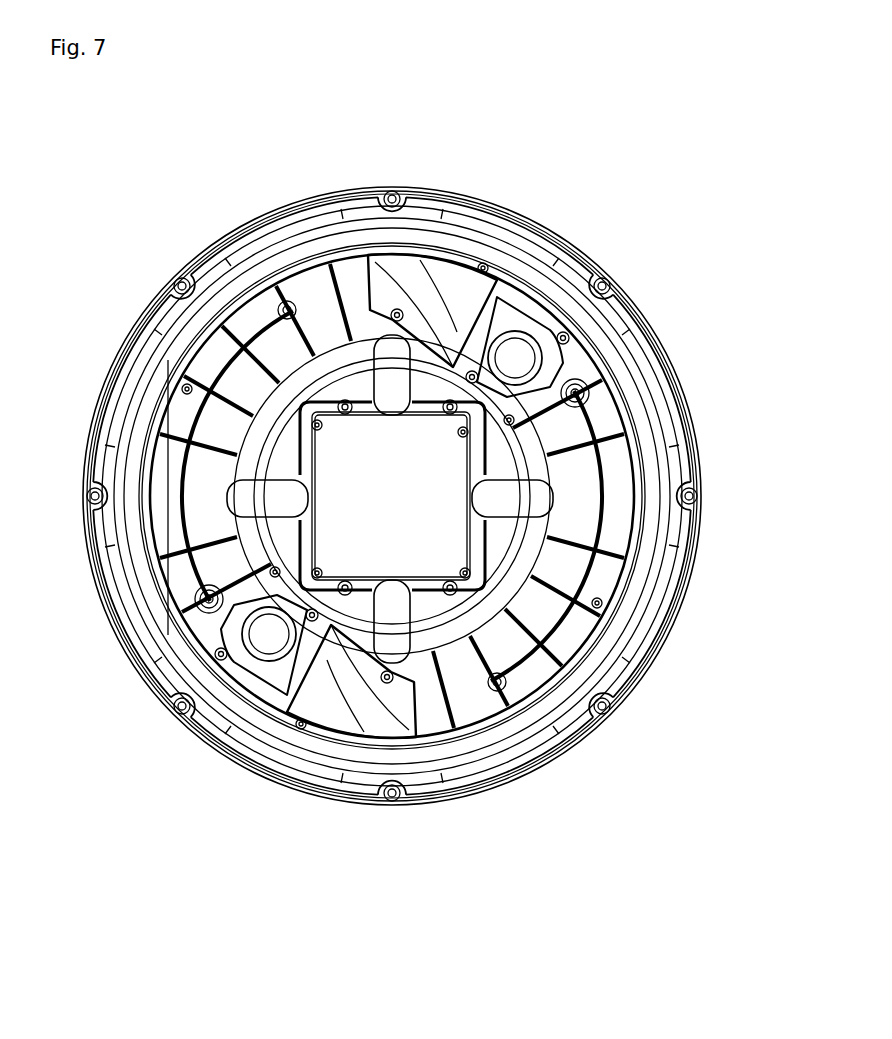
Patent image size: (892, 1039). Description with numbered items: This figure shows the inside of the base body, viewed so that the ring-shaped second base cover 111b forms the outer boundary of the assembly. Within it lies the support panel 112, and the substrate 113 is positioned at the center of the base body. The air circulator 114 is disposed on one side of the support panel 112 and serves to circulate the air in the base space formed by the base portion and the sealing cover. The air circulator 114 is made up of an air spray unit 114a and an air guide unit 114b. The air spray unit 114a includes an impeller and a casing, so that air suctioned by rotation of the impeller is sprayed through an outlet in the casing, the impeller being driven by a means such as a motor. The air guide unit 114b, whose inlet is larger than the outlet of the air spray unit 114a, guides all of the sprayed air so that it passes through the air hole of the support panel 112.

The second base cover 111b is at (700, 448).
The support panel 112 is at (630, 398).
The substrate 113 is at (472, 543).
The air circulator 114 is at (392, 498).
The air spray unit 114a is at (530, 300).
The air guide unit 114b is at (440, 253).